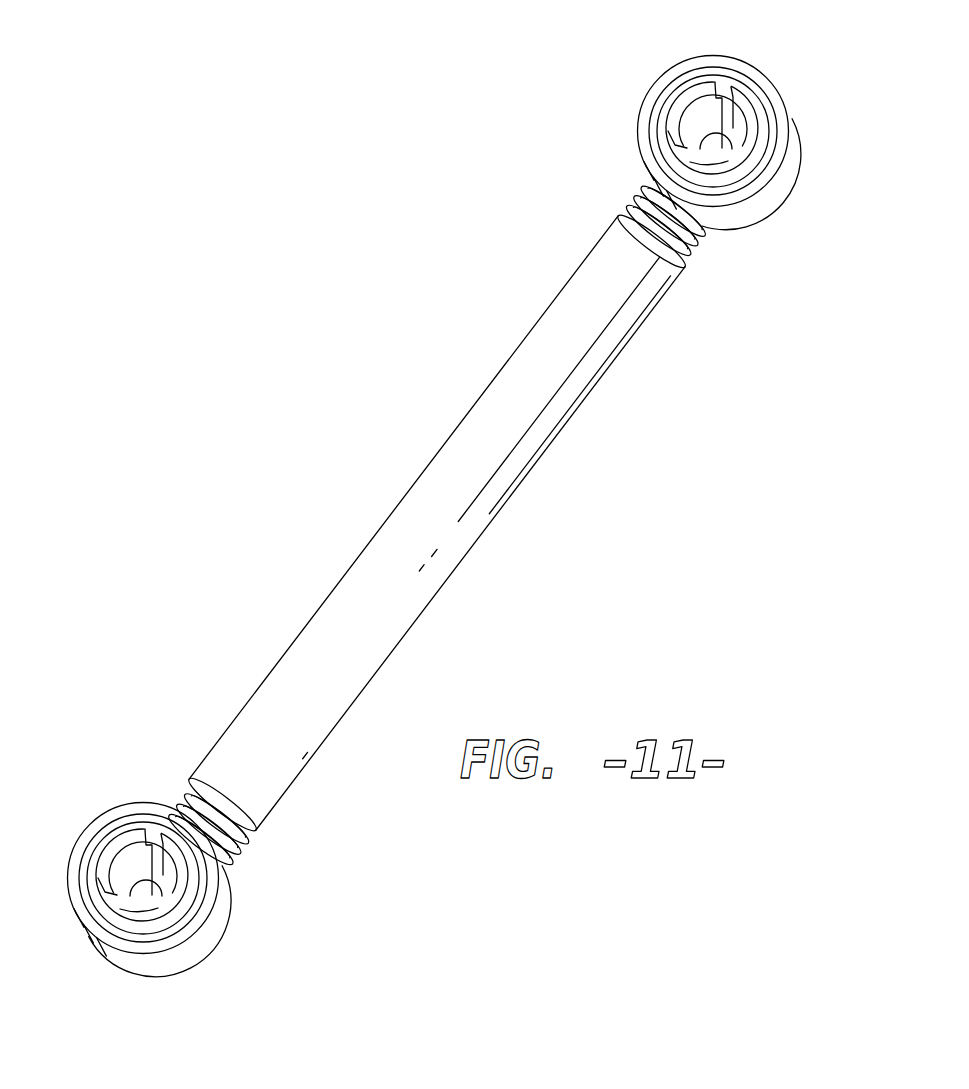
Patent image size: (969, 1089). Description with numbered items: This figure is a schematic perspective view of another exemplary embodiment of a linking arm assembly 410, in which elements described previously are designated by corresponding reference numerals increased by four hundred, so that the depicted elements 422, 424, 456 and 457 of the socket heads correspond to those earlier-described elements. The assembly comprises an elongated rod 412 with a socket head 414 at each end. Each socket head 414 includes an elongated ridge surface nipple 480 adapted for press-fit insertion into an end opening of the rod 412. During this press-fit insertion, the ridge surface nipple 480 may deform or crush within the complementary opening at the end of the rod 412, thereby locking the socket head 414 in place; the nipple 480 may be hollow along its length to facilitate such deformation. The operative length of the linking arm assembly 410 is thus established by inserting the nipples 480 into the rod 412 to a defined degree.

The linking arm assembly 410 is at (418, 320).
The rod 412 is at (453, 576).
The socket heads 414 is at (713, 48).
The housing body 422 is at (780, 207).
The outer ring 424 is at (685, 55).
The retaining clip 456 is at (688, 112).
The slot 457 is at (727, 130).
The elongated ridge surface nipple 480 is at (698, 252).